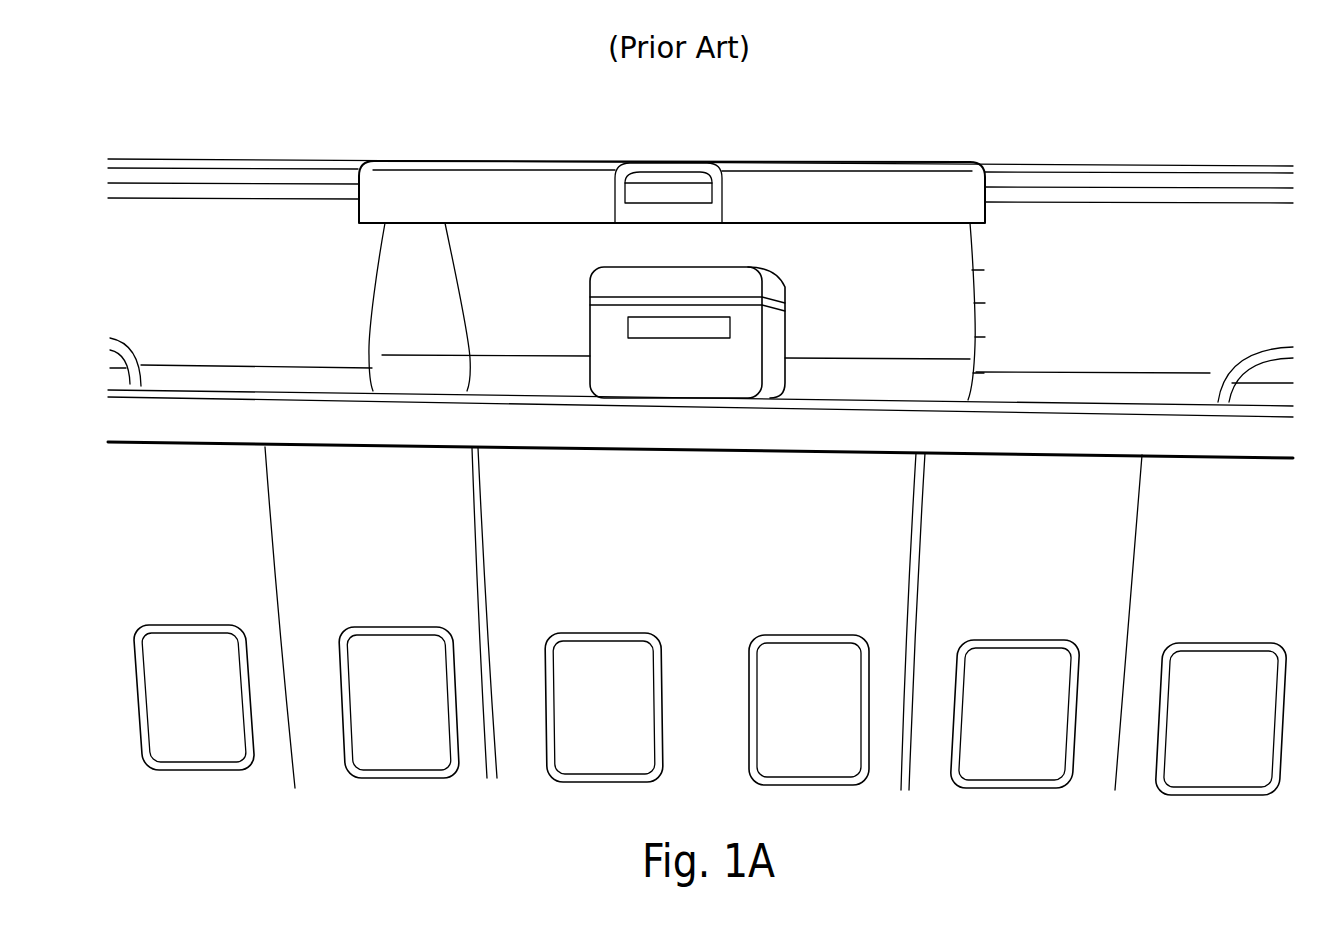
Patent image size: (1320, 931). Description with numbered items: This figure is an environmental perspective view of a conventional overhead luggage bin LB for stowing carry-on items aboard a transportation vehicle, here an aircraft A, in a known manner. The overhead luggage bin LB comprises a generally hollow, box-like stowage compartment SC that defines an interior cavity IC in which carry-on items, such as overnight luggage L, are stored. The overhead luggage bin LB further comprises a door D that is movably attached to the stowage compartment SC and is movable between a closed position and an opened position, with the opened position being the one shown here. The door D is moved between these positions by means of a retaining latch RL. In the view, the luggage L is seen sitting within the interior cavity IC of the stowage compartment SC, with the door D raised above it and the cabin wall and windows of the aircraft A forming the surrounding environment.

The luggage bin LB is at (418, 128).
The release latch RL is at (653, 193).
The door D is at (882, 192).
The side cover SC is at (975, 272).
The interior cabin IC is at (531, 300).
The luggage L is at (628, 382).
The aircraft cabin wall A is at (745, 591).